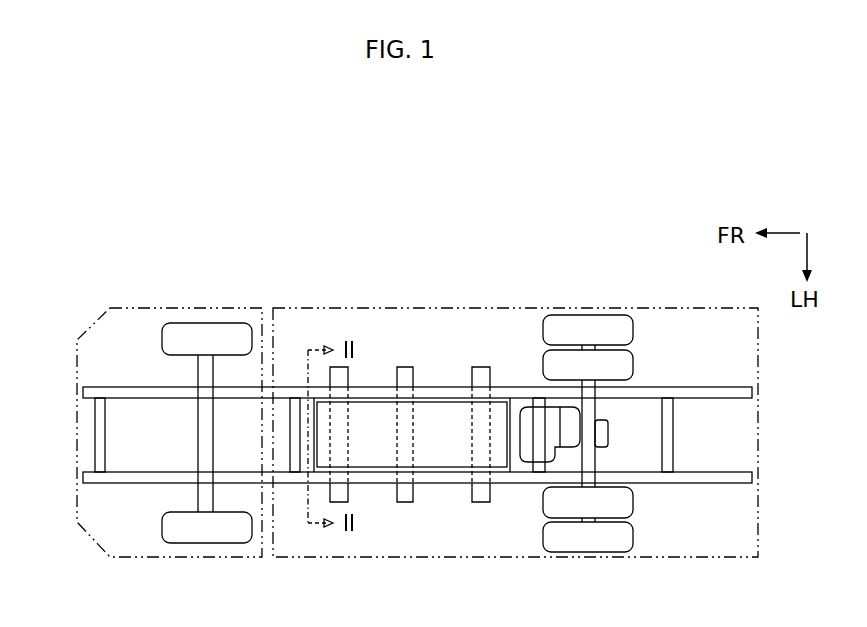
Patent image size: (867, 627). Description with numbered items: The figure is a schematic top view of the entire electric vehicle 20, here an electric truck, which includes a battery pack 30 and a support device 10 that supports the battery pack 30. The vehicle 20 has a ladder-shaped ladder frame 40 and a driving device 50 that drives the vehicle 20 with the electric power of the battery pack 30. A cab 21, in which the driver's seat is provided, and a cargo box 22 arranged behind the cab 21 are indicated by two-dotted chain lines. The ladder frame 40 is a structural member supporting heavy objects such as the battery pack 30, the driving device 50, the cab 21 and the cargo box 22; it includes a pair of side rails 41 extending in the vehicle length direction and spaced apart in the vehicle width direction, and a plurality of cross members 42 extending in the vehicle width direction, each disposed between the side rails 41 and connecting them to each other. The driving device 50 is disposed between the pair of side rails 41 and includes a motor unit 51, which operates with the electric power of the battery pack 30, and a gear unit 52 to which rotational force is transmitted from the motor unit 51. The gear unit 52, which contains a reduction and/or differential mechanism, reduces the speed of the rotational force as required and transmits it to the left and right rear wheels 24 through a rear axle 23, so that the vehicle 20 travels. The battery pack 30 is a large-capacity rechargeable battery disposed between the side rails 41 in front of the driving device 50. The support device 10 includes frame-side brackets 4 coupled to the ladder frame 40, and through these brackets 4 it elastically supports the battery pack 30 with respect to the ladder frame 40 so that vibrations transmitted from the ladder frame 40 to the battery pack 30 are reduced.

The frame-side bracket 4 is at (463, 356).
The support device 10 is at (412, 439).
The vehicle 20 is at (417, 359).
The cab 21 is at (176, 318).
The cargo box 22 is at (450, 308).
The rear axle 23 is at (604, 433).
The rear wheels 24 is at (625, 328).
The battery pack 30 is at (455, 447).
The ladder frame 40 is at (390, 421).
The side rail 41 is at (130, 387).
The cross member 42 is at (100, 433).
The driving device 50 is at (533, 346).
The motor unit 51 is at (518, 447).
The gear unit 52 is at (555, 415).